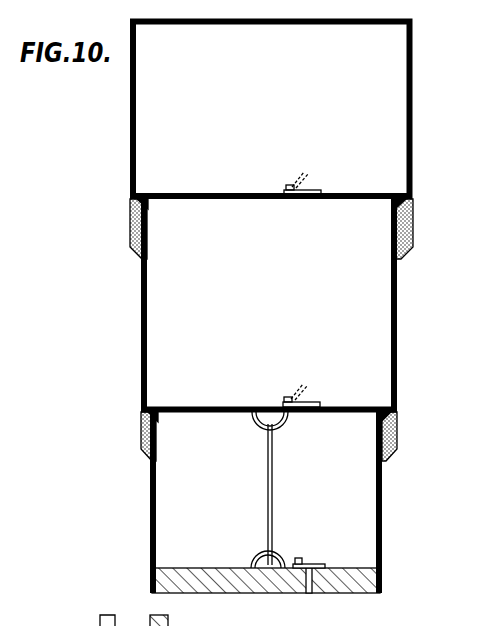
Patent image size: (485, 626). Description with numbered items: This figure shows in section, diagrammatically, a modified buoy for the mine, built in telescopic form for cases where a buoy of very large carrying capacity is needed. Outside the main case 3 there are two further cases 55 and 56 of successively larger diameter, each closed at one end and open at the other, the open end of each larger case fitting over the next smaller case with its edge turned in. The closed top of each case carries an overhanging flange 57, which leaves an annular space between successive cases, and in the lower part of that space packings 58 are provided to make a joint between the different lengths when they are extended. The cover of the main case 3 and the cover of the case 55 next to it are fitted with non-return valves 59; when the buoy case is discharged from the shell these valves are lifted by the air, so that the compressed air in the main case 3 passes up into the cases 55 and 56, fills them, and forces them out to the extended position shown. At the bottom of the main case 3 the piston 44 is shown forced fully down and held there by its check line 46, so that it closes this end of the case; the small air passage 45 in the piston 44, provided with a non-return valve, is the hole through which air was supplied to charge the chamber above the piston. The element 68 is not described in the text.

The case 3 is at (150, 496).
The piston 44 is at (337, 587).
The air passage 45 is at (306, 590).
The check line 46 is at (274, 486).
The case 55 is at (141, 311).
The case 56 is at (130, 118).
The overhanging flange 57 is at (147, 201).
The packing 58 is at (134, 223).
The non-return valve 59 is at (316, 193).
The bottom element 68 is at (151, 617).